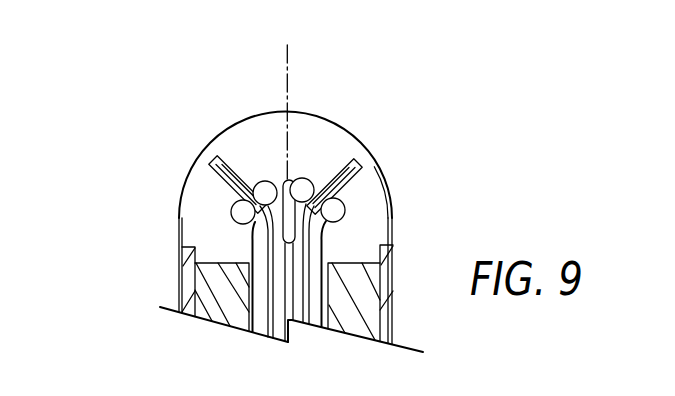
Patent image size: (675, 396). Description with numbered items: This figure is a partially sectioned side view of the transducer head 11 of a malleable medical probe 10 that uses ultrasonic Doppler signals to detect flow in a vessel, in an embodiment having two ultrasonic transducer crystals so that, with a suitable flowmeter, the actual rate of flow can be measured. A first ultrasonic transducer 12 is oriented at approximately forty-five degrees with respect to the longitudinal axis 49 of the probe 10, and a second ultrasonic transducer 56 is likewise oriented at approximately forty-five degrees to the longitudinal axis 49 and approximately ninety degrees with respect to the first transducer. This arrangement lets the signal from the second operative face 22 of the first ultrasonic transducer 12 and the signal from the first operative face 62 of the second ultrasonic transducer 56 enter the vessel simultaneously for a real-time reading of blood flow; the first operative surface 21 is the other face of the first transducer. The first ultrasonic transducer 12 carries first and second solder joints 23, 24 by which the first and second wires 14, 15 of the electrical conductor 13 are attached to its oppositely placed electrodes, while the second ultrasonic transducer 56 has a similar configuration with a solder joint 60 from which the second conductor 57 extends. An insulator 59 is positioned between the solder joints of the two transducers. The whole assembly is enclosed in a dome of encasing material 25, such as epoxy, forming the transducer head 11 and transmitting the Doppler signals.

The malleable medical probe 10 is at (138, 99).
The transducer head 11 is at (368, 150).
The first ultrasonic transducer 12 is at (232, 171).
The electrical conductor 13 is at (245, 251).
The first wire 14 is at (268, 273).
The second wire 15 is at (274, 292).
The first operative surface 21 is at (215, 178).
The second operative face 22 is at (239, 178).
The first solder joint 23 is at (231, 210).
The second solder joint 24 is at (263, 182).
The encasing material 25 is at (348, 144).
The longitudinal axis 49 is at (288, 100).
The second ultrasonic transducer 56 is at (356, 160).
The second conductor 57 is at (336, 230).
The insulator 59 is at (282, 183).
The solder joint 60 is at (345, 207).
The first operative face 62 is at (327, 175).